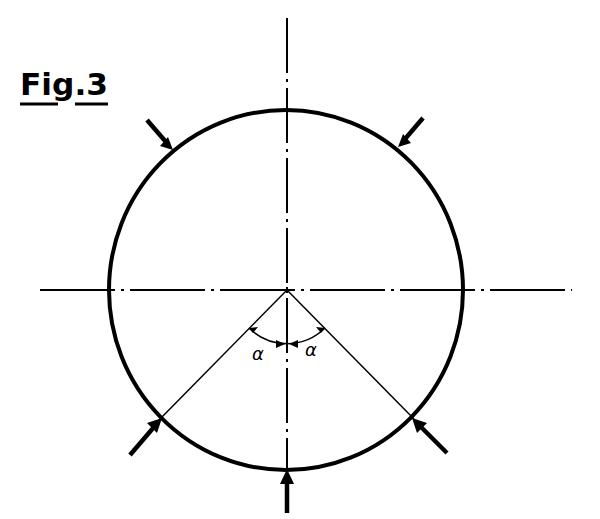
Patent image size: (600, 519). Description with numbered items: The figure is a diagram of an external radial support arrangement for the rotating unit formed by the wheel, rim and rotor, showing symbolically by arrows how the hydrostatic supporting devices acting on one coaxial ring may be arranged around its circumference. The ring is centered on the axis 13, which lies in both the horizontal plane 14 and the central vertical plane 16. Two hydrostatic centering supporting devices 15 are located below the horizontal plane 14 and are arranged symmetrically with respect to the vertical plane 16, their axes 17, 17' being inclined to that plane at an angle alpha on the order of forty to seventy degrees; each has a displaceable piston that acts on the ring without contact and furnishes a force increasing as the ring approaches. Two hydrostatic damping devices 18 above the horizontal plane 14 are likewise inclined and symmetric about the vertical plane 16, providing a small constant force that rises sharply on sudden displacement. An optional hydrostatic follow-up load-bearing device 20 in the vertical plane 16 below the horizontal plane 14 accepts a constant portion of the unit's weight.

The axis 13 is at (288, 289).
The horizontal plane 14 is at (510, 290).
The hydrostatic centering supporting devices 15 is at (148, 442).
The central vertical plane 16 is at (291, 75).
The axis of centering supporting device 17 is at (350, 354).
The axis of centering supporting device 17' is at (223, 354).
The hydrostatic damping devices 18 is at (157, 127).
The hydrostatic follow-up load-bearing device 20 is at (290, 495).